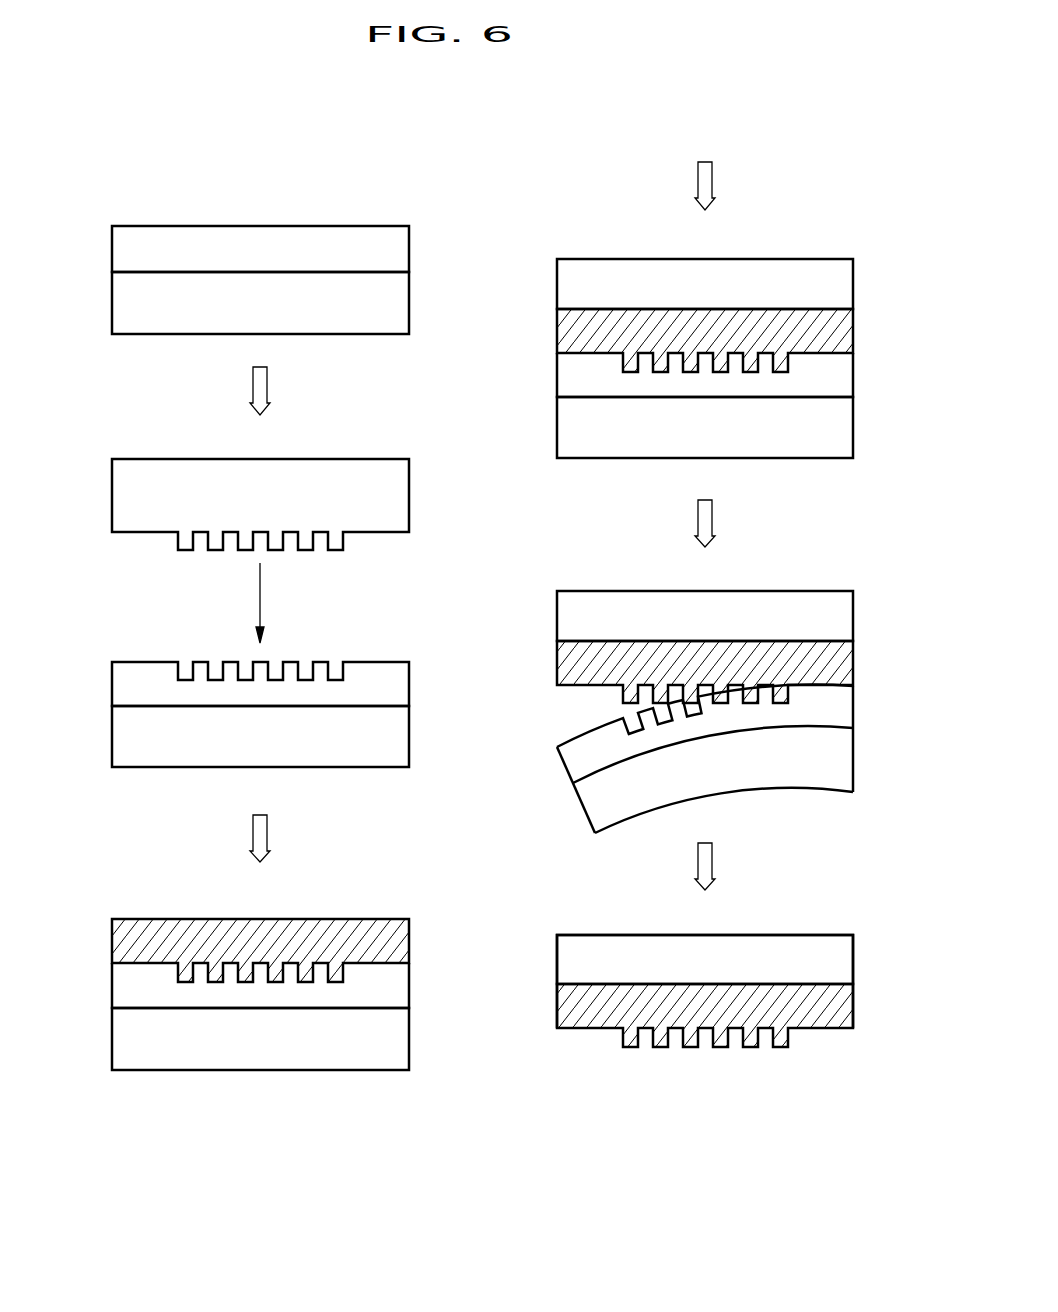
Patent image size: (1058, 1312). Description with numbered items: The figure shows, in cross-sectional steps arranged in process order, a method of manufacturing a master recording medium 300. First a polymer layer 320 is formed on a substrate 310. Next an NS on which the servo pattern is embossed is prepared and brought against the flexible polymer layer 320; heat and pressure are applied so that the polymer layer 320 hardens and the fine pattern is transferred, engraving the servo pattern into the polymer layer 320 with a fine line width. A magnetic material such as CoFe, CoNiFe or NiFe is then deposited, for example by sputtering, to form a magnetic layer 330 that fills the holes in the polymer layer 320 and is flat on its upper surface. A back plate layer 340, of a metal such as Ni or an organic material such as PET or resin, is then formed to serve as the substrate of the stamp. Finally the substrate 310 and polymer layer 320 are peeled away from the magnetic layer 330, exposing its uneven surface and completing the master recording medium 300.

The master recording medium 300 is at (658, 1095).
The substrate 310 is at (118, 300).
The polymer layer 320 is at (118, 239).
The magnetic layer 330 is at (118, 937).
The back plate layer 340 is at (853, 285).
The element NS is at (118, 500).